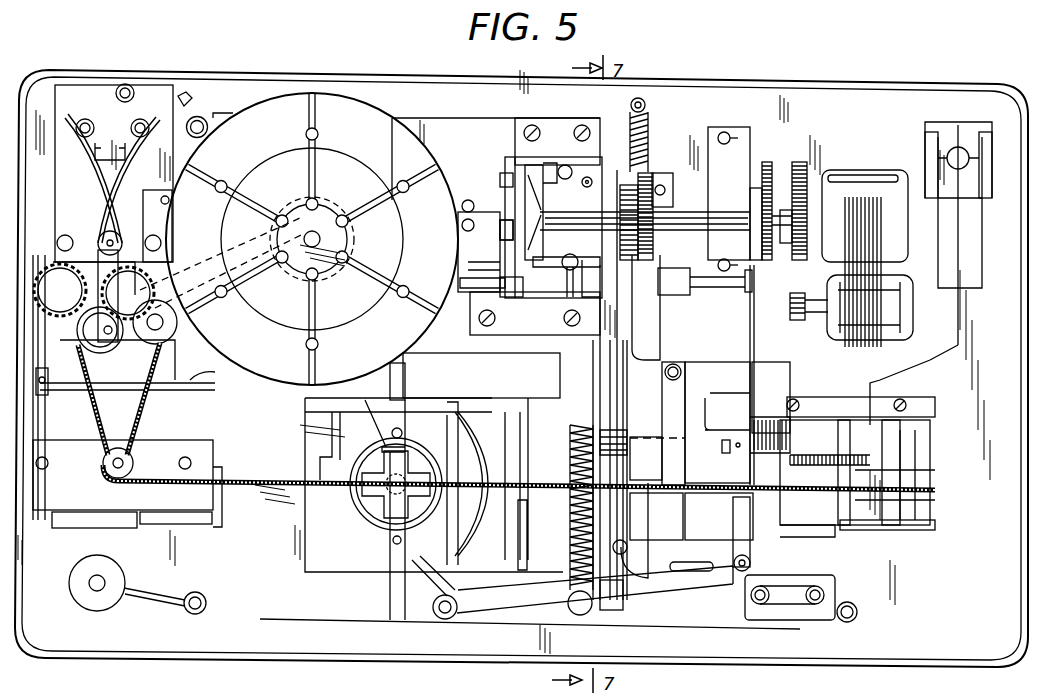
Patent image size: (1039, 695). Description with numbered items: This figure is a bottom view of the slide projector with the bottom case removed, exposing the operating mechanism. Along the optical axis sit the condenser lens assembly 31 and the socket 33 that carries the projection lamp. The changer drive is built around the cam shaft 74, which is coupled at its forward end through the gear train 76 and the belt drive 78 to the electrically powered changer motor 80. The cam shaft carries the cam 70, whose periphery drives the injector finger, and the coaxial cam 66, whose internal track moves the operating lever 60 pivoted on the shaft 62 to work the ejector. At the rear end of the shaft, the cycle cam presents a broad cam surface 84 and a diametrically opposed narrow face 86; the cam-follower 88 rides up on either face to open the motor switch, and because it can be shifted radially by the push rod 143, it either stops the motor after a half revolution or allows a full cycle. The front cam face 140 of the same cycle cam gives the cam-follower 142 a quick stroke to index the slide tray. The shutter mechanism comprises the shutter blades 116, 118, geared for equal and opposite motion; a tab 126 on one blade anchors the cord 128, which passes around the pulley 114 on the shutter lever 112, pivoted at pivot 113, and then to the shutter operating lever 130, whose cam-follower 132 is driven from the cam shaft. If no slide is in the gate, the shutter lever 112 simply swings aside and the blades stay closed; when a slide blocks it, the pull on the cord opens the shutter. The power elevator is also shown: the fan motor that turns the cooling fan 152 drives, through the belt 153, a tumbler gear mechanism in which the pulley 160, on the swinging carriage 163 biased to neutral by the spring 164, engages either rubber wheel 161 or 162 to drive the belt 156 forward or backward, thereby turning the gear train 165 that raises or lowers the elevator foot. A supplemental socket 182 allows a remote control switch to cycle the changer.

The condenser lens assembly 31 is at (478, 570).
The socket 33 is at (380, 520).
The operating lever 60 is at (660, 335).
The shaft 62 is at (712, 280).
The cam 66 is at (645, 175).
The cam 70 is at (624, 186).
The cam shaft 74 is at (700, 221).
The gear train 76 is at (770, 175).
The belt drive 78 is at (790, 297).
The changer motor 80 is at (891, 280).
The broad cam surface 84 is at (468, 243).
The narrow face 86 is at (508, 180).
The cam-follower 88 is at (460, 270).
The shutter lever 112 is at (548, 604).
The pivot 113 is at (447, 619).
The pulley 114 is at (800, 577).
The shutter blade 116 is at (840, 540).
The shutter blade 118 is at (650, 446).
The tab 126 is at (735, 519).
The cord 128 is at (750, 518).
The shutter operating lever 130 is at (754, 320).
The cam-follower 132 is at (752, 200).
The front cam face 140 is at (540, 266).
The cam-follower 142 is at (558, 266).
The push rod 143 is at (190, 381).
The cooling fan 152 is at (358, 166).
The belt 153 is at (208, 342).
The belt 156 is at (286, 478).
The pulley 160 is at (100, 350).
The rubber wheel 161 is at (80, 313).
The rubber wheel 162 is at (178, 270).
The swinging carriage 163 is at (90, 240).
The spring 164 is at (112, 212).
The gear train 165 is at (800, 470).
The supplemental socket 182 is at (597, 212).